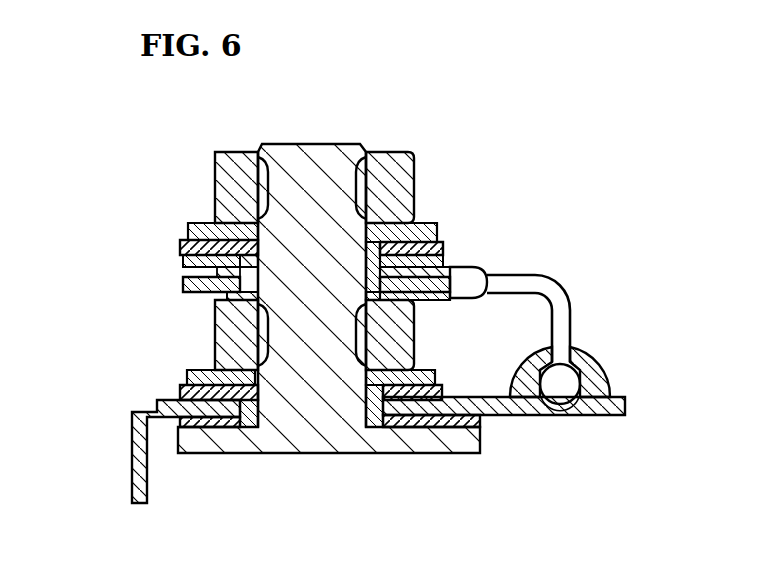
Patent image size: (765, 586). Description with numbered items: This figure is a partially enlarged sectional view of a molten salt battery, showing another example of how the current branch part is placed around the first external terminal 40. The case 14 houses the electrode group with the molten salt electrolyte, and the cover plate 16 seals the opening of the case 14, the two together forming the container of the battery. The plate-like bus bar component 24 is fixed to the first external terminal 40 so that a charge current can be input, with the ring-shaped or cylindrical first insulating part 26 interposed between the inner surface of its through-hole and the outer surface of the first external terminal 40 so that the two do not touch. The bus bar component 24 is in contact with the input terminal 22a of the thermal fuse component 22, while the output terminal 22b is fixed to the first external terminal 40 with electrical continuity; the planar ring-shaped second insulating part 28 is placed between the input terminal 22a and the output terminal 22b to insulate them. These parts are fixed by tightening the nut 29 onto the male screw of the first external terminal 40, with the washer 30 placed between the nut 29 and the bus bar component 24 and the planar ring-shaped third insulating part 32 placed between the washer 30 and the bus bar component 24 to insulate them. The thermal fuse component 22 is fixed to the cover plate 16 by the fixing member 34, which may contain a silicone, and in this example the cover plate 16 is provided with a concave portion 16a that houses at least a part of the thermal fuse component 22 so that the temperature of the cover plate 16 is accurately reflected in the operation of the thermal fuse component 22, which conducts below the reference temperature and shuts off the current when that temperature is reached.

The case 14 is at (133, 461).
The cover plate 16 is at (603, 412).
The concave portion 16a is at (560, 404).
The thermal fuse component 22 is at (566, 383).
The input terminal 22a is at (178, 273).
The output terminal 22b is at (222, 294).
The bus bar component 24 is at (172, 260).
The first insulating part 26 is at (252, 268).
The second insulating part 28 is at (190, 286).
The nut 29 is at (410, 152).
The washer 30 is at (198, 224).
The third insulating part 32 is at (181, 244).
The fixing member 34 is at (588, 353).
The first external terminal 40 is at (320, 144).